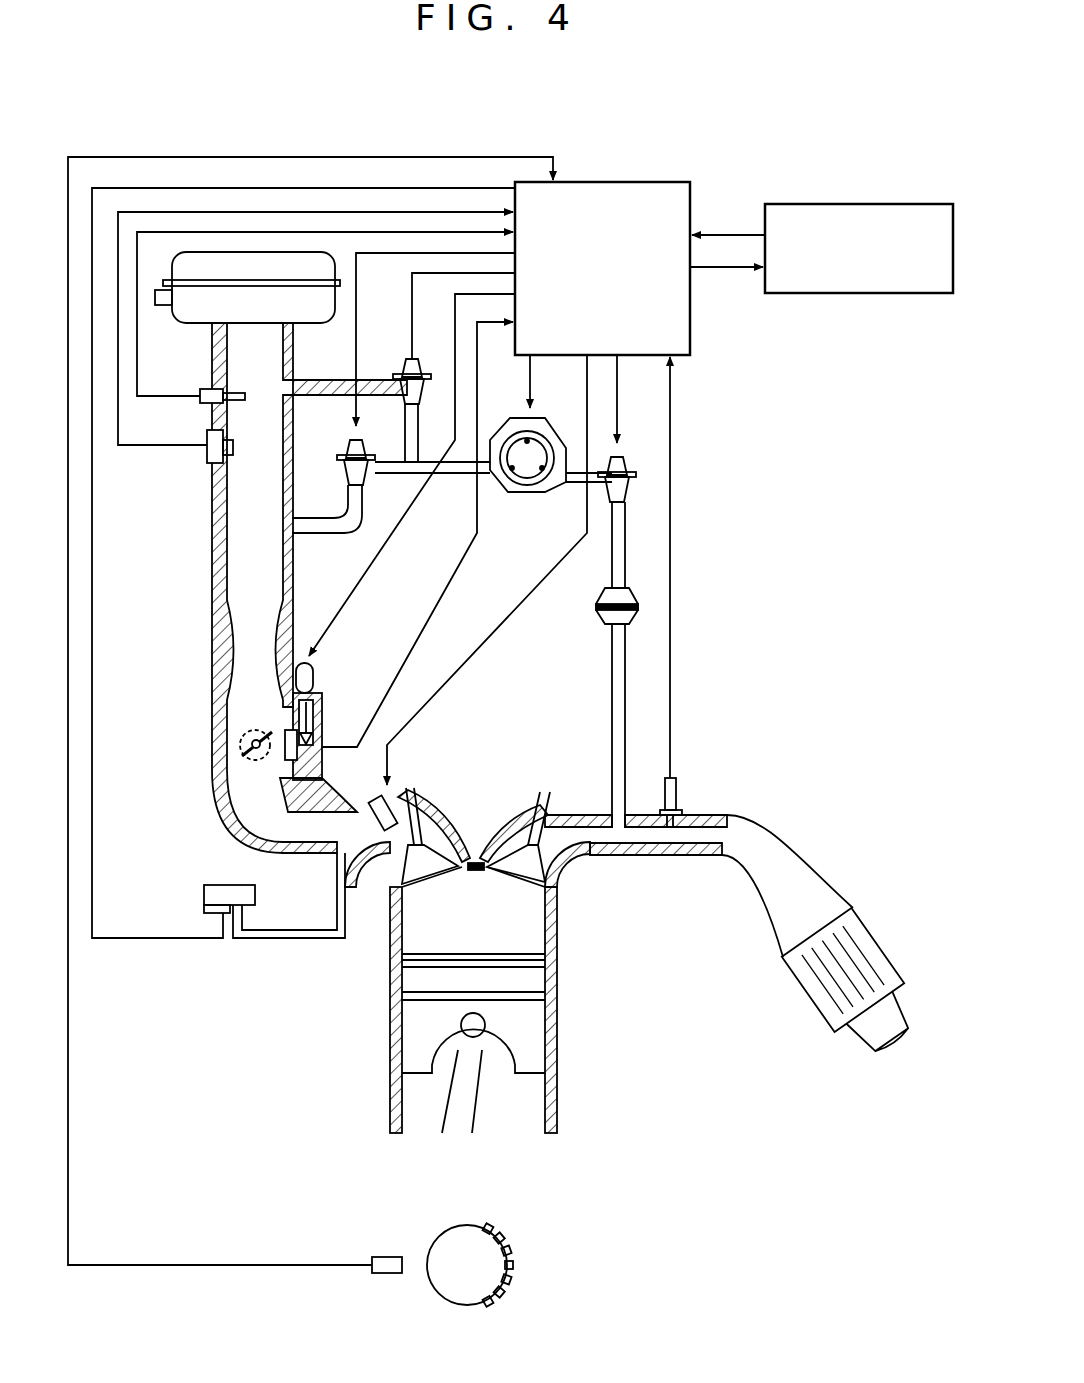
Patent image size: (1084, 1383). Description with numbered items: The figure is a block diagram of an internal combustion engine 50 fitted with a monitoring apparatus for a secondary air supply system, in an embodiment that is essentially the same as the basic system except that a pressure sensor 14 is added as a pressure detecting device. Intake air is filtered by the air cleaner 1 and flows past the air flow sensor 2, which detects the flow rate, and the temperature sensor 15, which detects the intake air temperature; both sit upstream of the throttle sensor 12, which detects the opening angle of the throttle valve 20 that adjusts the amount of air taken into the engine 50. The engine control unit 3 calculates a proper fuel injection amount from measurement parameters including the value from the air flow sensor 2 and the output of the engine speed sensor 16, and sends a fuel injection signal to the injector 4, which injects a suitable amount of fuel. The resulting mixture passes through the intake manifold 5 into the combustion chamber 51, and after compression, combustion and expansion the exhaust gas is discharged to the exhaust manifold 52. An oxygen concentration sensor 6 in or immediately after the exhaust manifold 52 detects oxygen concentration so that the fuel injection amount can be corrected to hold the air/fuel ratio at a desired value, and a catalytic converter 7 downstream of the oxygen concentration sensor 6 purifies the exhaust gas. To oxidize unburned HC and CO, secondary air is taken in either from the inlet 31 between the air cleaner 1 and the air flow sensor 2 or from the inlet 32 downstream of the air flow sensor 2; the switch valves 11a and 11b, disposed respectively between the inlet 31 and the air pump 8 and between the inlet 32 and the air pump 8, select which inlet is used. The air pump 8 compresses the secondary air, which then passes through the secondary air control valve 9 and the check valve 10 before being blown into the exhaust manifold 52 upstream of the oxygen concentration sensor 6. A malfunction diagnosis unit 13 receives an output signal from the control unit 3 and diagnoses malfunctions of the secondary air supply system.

The air cleaner 1 is at (188, 325).
The air flow sensor 2 is at (207, 458).
The engine control unit 3 is at (690, 340).
The injector 4 is at (372, 798).
The intake manifold 5 is at (360, 843).
The oxygen concentration sensor 6 is at (680, 790).
The catalytic converter 7 is at (830, 910).
The air pump 8 is at (525, 492).
The secondary air control valve 9 is at (630, 490).
The check valve 10 is at (612, 622).
The switch valve 11a is at (410, 358).
The switch valve 11b is at (348, 480).
The throttle sensor 12 is at (243, 735).
The malfunction diagnosis unit 13 is at (855, 295).
The pressure sensor 14 is at (255, 895).
The temperature sensor 15 is at (200, 398).
The engine speed sensor 16 is at (383, 1255).
The throttle valve 20 is at (285, 752).
The inlet 31 is at (283, 388).
The inlet 32 is at (292, 552).
The internal combustion engine 50 is at (390, 975).
The combustion chamber 51 is at (530, 933).
The exhaust manifold 52 is at (620, 835).